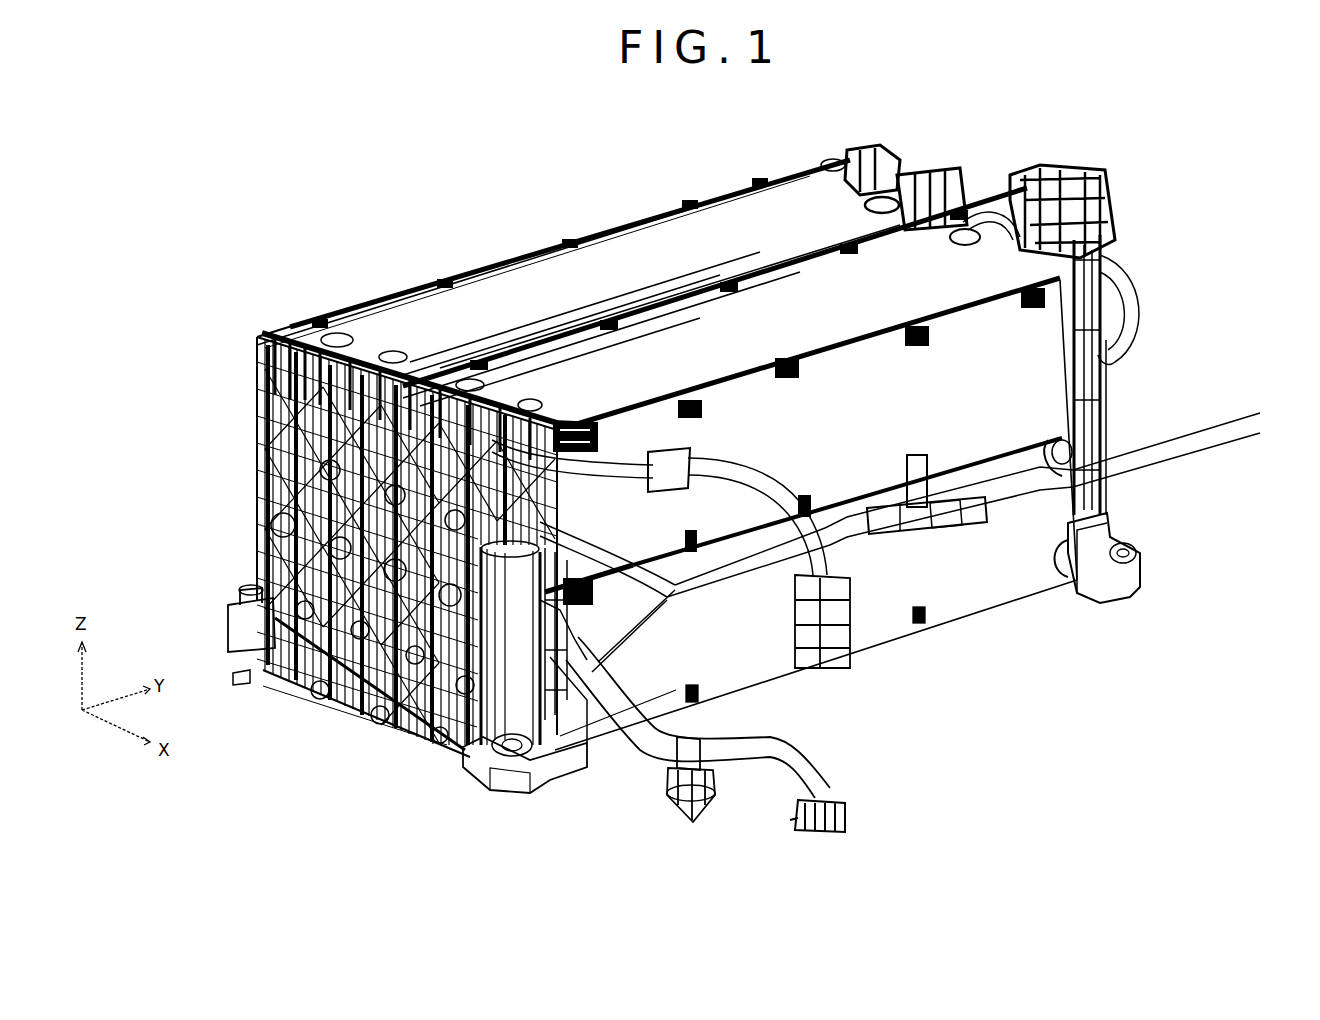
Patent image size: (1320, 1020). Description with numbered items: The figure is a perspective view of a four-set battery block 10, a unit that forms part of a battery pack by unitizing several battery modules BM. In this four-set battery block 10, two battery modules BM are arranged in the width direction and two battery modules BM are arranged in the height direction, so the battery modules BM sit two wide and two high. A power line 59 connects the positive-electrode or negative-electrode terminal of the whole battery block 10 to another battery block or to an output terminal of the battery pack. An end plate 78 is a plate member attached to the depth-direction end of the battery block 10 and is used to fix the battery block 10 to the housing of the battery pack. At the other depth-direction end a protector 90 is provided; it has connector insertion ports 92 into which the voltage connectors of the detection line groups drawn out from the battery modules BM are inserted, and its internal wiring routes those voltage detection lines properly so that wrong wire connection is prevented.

The battery block 10 is at (460, 145).
The battery module BM is at (688, 342).
The protector 90 is at (915, 165).
The connector insertion port 92 is at (1135, 268).
The power line 59 is at (790, 525).
The end plate 78 is at (347, 697).